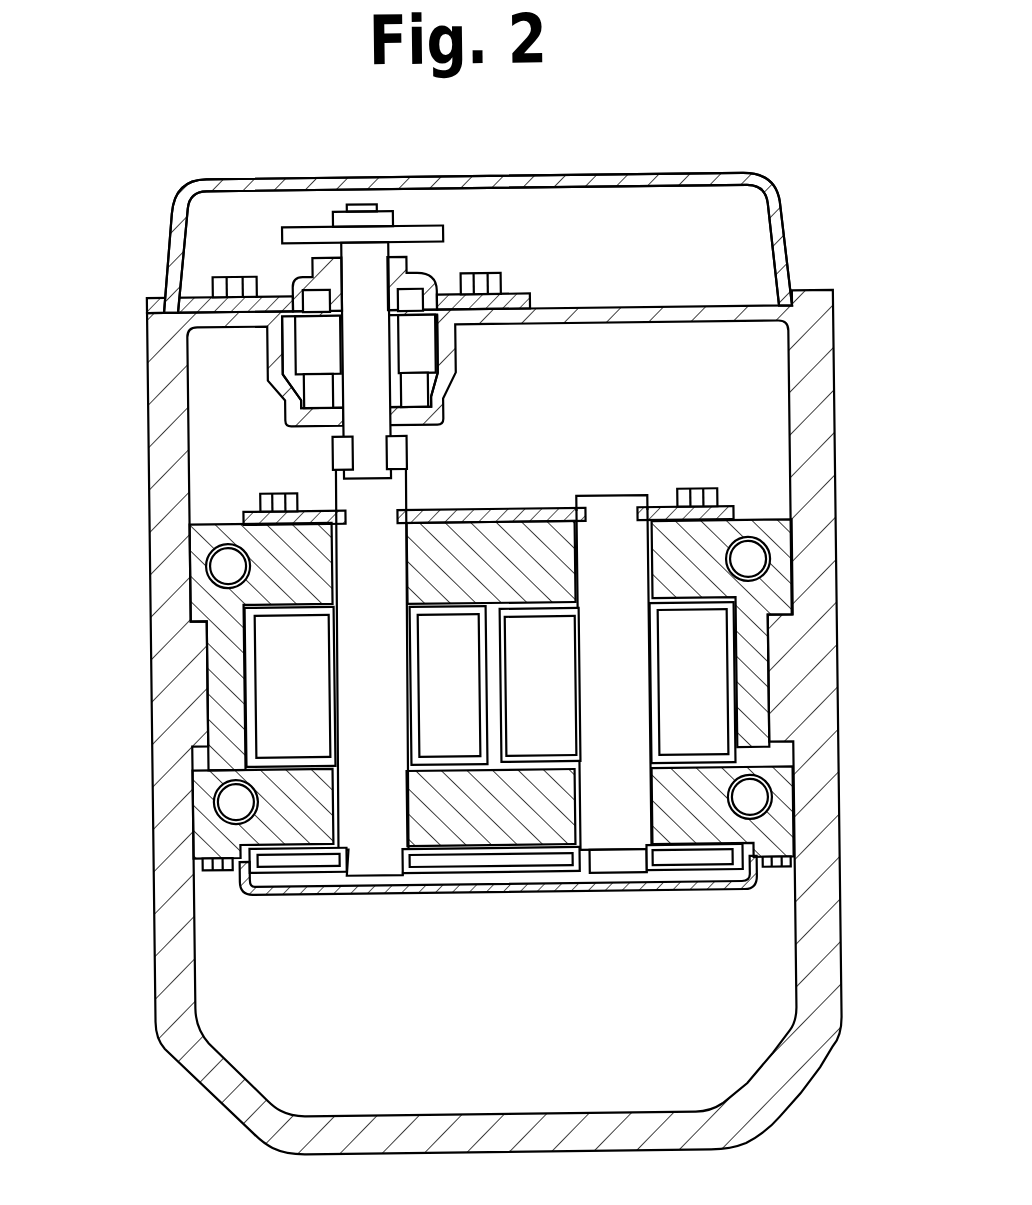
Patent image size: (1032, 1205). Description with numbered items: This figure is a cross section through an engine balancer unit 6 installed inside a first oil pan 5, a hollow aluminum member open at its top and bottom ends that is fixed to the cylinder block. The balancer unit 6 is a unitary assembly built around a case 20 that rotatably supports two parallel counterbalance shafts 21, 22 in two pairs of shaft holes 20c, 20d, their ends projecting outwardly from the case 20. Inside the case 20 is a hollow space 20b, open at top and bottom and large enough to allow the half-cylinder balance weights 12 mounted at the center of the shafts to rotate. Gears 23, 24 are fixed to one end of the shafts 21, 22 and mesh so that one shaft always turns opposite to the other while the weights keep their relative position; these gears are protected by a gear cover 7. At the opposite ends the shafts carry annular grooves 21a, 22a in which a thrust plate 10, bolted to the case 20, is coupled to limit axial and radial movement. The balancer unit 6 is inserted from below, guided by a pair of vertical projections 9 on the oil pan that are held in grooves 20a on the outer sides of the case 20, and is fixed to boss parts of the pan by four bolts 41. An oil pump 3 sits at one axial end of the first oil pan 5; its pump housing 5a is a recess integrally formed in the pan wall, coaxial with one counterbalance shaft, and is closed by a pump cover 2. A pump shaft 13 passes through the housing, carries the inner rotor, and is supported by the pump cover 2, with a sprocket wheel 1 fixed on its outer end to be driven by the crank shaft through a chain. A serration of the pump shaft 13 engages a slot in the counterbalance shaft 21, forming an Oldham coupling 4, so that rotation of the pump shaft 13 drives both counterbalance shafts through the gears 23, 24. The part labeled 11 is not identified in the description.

The sprocket wheel 1 is at (307, 230).
The pump cover 2 is at (174, 283).
The oil pump 3 is at (441, 356).
The Oldham coupling 4 is at (334, 456).
The first oil pan 5 is at (162, 466).
The pump housing 5a is at (275, 369).
The balancer unit 6 is at (521, 816).
The gear cover 7 is at (614, 889).
The vertical projections 9 is at (495, 723).
The thrust plate 10 is at (512, 512).
The cover 11 is at (800, 236).
The balance weights 12 is at (269, 700).
The pump shaft 13 is at (379, 454).
The case 20 is at (543, 533).
The grooves 20a is at (775, 628).
The hollow space 20b is at (290, 604).
The shaft holes 20c is at (271, 800).
The shaft holes 20d is at (658, 809).
The counterbalance shaft 21 is at (331, 536).
The annular groove 21a is at (452, 502).
The counterbalance shaft 22 is at (618, 528).
The annular groove 22a is at (652, 500).
The gear 23 is at (270, 859).
The gear 24 is at (674, 859).
The bolts 41 is at (229, 563).